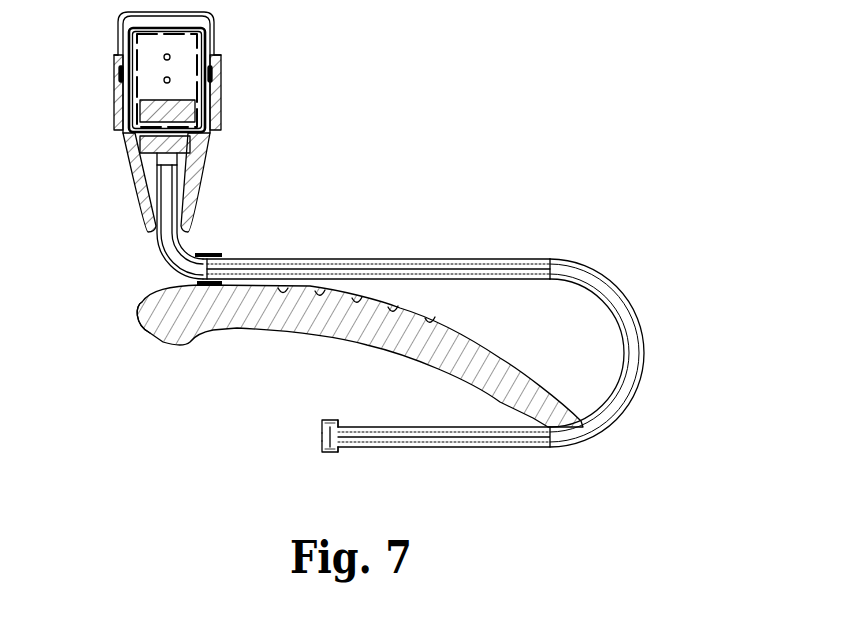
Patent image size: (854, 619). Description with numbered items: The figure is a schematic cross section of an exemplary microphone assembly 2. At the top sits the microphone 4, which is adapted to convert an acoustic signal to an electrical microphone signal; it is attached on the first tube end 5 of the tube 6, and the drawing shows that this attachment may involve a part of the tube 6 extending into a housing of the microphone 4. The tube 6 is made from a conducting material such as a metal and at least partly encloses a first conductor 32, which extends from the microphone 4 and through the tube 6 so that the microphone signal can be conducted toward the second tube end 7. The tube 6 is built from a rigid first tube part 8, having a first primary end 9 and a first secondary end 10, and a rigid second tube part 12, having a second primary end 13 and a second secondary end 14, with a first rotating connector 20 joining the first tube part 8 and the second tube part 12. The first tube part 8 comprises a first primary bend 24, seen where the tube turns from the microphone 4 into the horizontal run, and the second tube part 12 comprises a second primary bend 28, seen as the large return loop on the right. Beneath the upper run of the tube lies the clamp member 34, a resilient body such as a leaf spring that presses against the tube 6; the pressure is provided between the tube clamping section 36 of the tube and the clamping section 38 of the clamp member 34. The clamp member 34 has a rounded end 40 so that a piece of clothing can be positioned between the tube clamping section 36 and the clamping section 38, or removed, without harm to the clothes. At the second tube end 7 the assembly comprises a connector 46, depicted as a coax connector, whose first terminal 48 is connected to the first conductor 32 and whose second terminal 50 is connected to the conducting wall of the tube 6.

The microphone assembly 2 is at (689, 69).
The microphone 4 is at (217, 115).
The first tube end 5 is at (126, 186).
The first primary end 9 is at (156, 240).
The first tube part 8 is at (163, 256).
The first primary bend 24 is at (174, 267).
The first secondary end 10 is at (261, 223).
The second primary end 13 is at (261, 223).
The first rotating connector 20 is at (215, 256).
The tube 6 is at (277, 262).
The tube clamping section 36 is at (322, 270).
The second tube part 12 is at (470, 262).
The second primary bend 28 is at (644, 366).
The first conductor 32 is at (503, 438).
The clamp member 34 is at (335, 337).
The clamping section 38 is at (299, 292).
The rounded end 40 is at (148, 343).
The connector 46 is at (321, 452).
The first terminal 48 is at (321, 437).
The second terminal 50 is at (322, 433).
The second tube end 7 is at (368, 458).
The second secondary end 14 is at (339, 455).